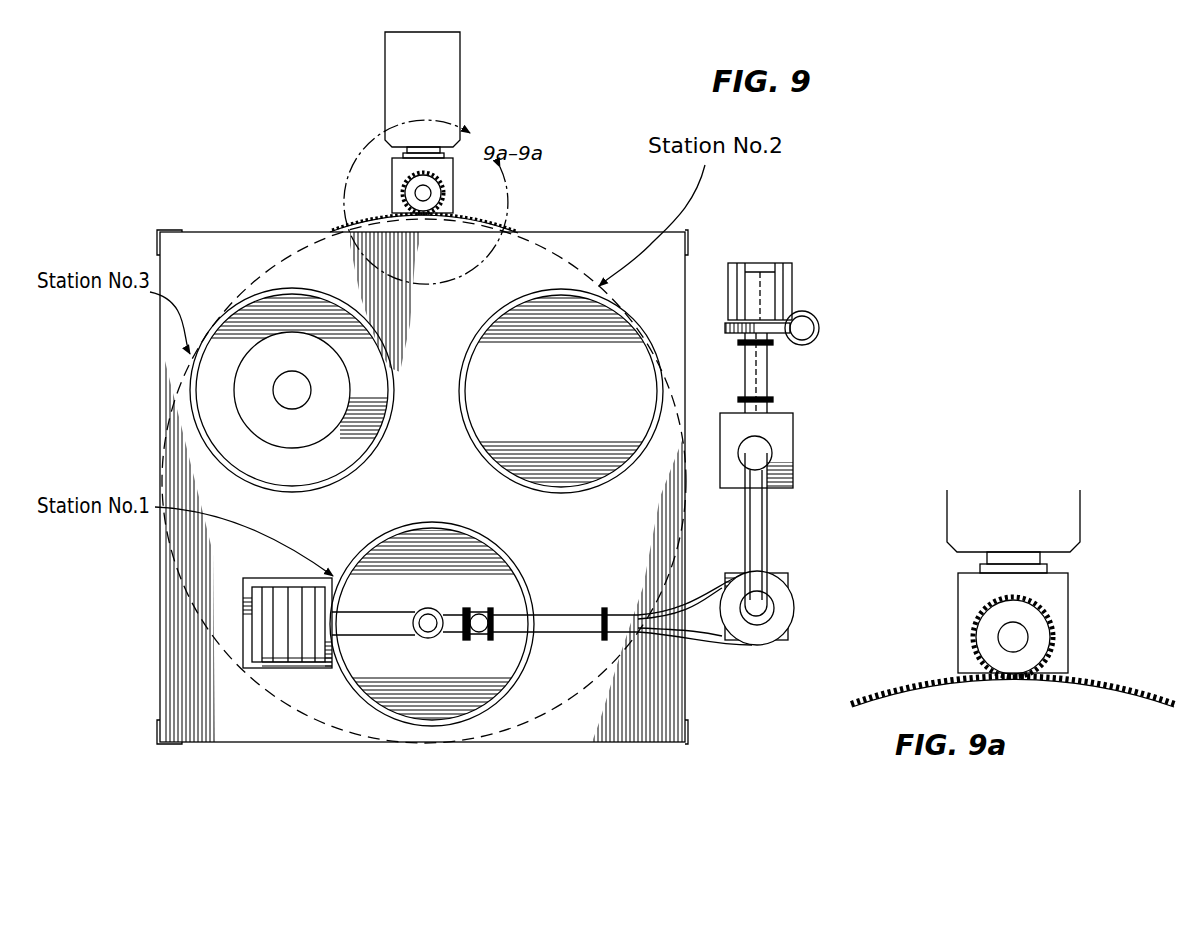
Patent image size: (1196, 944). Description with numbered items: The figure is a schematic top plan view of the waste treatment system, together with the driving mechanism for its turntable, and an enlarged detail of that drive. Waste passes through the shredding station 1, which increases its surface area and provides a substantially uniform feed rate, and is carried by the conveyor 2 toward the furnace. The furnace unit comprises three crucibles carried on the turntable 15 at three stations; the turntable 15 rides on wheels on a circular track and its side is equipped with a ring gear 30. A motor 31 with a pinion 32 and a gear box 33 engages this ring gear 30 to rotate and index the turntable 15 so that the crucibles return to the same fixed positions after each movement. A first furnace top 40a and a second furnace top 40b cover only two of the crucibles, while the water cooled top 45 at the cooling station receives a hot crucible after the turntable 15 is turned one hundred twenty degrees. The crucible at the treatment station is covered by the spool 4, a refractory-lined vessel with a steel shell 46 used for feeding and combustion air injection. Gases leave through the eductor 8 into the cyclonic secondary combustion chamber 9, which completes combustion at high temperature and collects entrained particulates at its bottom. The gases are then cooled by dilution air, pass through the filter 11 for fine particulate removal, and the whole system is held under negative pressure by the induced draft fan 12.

In FIG. 9, the shredding station 1 is at (288, 670).
In FIG. 9, the conveyor 2 is at (378, 630).
In FIG. 9, the spool 4 is at (476, 573).
In FIG. 9, the eductor 8 is at (538, 617).
In FIG. 9, the cyclonic secondary combustion chamber 9 is at (770, 630).
In FIG. 9, the filter 11 is at (783, 438).
In FIG. 9, the induced draft fan 12 is at (760, 290).
In FIG. 9, the turntable 15 is at (605, 690).
In FIG. 9, the ring gear 30 is at (508, 233).
In FIG. 9A, the ring gear 30 is at (1097, 683).
In FIG. 9, the motor 31 is at (398, 63).
In FIG. 9A, the motor 31 is at (957, 512).
In FIG. 9, the pinion 32 is at (400, 188).
In FIG. 9A, the pinion 32 is at (977, 633).
In FIG. 9, the gear box 33 is at (392, 168).
In FIG. 9A, the gear box 33 is at (968, 592).
In FIG. 9, the first furnace top 40a is at (426, 727).
In FIG. 9, the second furnace top 40b is at (492, 430).
In FIG. 9, the water cooled top 45 is at (615, 353).
In FIG. 9, the steel shell 46 is at (508, 688).